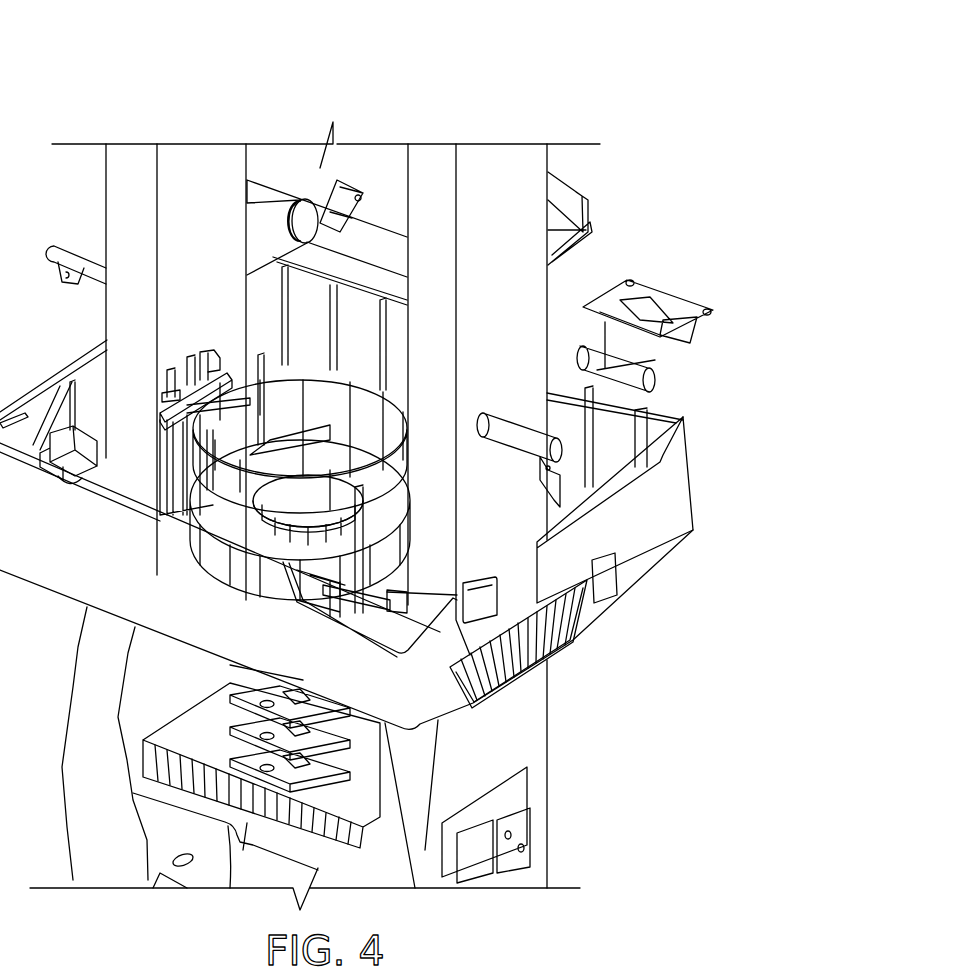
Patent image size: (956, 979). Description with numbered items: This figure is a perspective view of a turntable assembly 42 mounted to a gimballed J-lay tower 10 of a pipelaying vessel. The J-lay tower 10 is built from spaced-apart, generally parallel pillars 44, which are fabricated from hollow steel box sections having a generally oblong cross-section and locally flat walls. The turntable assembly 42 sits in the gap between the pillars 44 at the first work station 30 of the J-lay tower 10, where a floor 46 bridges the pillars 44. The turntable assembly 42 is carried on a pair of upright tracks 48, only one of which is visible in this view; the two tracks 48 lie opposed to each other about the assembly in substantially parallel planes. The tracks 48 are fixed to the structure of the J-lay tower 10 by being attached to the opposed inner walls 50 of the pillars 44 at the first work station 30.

The J-lay tower 10 is at (592, 72).
The first work station 30 is at (640, 545).
The turntable assembly 42 is at (160, 413).
The pillars 44 is at (126, 214).
The floor 46 is at (345, 395).
The upright tracks 48 is at (170, 373).
The inner walls 50 is at (207, 170).